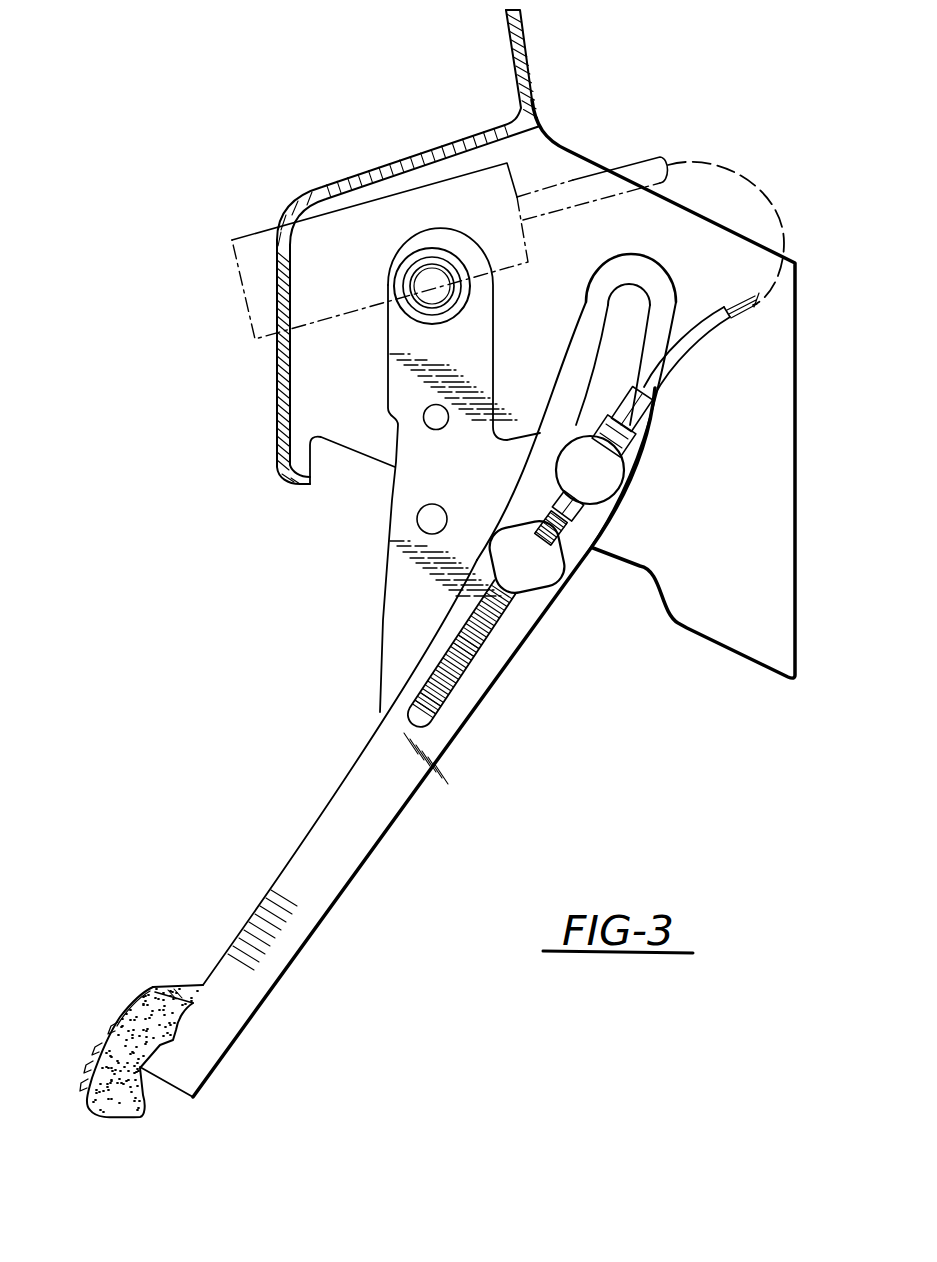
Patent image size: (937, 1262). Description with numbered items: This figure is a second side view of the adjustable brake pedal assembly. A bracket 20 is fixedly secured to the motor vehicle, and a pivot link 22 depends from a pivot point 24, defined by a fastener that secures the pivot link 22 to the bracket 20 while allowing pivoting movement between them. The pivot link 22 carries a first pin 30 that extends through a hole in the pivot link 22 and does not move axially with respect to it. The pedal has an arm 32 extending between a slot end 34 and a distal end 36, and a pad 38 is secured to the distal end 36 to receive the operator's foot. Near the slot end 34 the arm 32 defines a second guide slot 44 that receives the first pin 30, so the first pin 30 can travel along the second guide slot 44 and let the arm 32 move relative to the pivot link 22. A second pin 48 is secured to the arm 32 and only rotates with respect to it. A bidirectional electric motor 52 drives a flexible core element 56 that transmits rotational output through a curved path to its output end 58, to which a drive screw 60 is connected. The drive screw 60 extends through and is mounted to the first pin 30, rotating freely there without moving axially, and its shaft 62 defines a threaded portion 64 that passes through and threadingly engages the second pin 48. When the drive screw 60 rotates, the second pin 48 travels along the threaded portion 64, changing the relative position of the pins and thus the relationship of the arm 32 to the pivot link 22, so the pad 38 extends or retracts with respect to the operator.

The bracket 20 is at (513, 38).
The pivot link 22 is at (388, 346).
The pivot point 24 is at (456, 300).
The first pin 30 is at (626, 490).
The arm 32 is at (371, 852).
The slot end 34 is at (630, 254).
The distal end 36 is at (212, 1080).
The pad 38 is at (160, 987).
The second guide slot 44 is at (625, 350).
The second pin 48 is at (565, 578).
The motor 52 is at (261, 232).
The flexible core element 56 is at (728, 315).
The output end 58 is at (679, 370).
The drive screw 60 is at (507, 607).
The shaft 62 is at (472, 648).
The threaded portion 64 is at (438, 698).